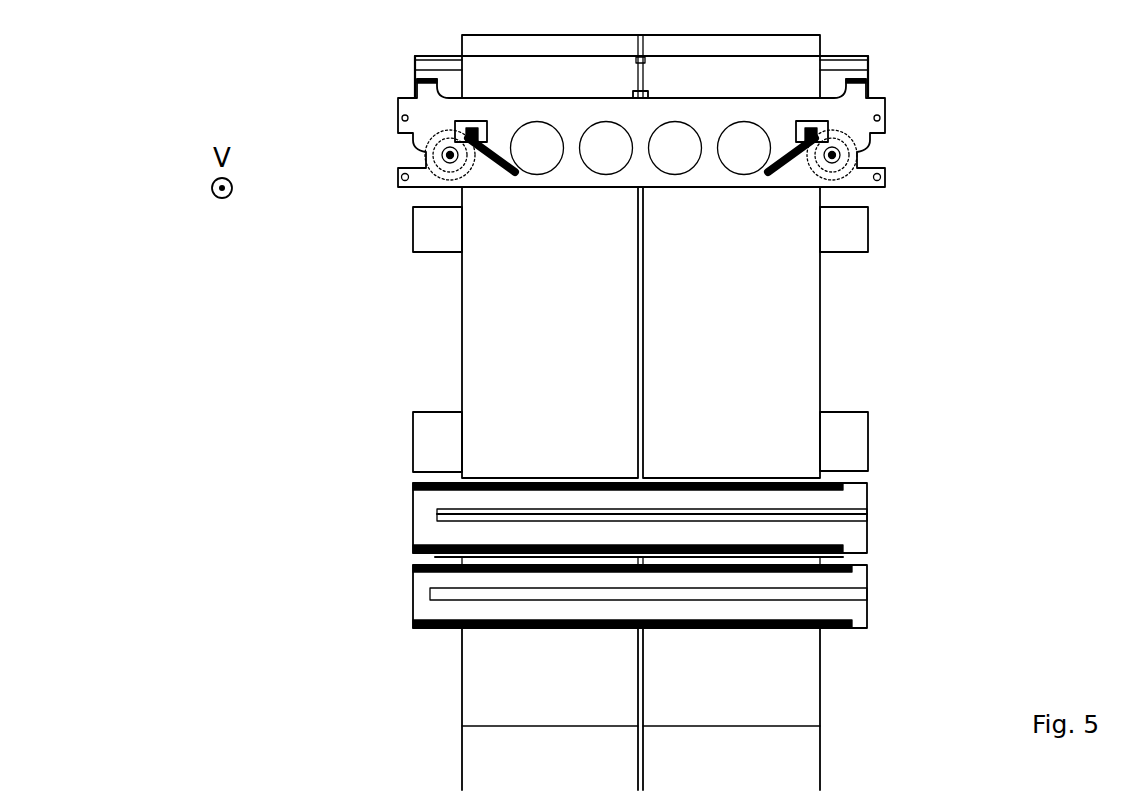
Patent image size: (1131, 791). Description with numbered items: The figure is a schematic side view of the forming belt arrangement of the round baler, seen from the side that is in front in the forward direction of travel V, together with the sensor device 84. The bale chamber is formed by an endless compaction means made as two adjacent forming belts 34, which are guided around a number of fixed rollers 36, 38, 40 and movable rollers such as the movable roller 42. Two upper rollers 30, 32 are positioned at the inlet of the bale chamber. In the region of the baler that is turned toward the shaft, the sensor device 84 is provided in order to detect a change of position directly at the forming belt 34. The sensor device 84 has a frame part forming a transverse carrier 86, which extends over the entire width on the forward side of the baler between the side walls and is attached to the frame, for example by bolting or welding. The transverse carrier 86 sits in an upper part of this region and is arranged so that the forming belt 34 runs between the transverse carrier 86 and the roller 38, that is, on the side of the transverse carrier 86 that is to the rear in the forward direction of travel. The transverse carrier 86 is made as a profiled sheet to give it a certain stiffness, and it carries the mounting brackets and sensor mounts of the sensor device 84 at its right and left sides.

The upper roller 30 is at (447, 607).
The upper roller 32 is at (418, 522).
The forming belt 34 is at (542, 397).
The fixed roller 36 is at (427, 442).
The fixed roller 38 is at (417, 70).
The fixed roller 40 is at (413, 60).
The movable roller 42 is at (433, 240).
The sensor device 84 is at (590, 214).
The transverse carrier 86 is at (400, 128).